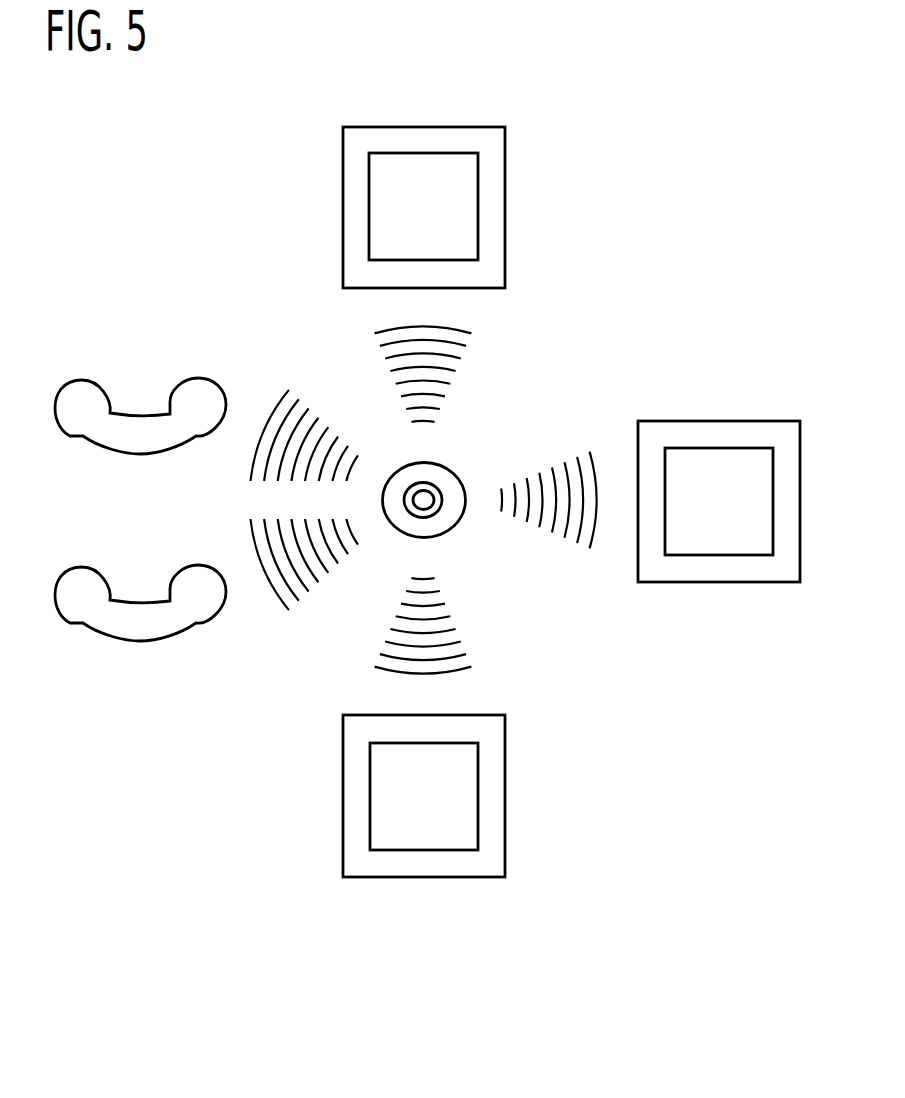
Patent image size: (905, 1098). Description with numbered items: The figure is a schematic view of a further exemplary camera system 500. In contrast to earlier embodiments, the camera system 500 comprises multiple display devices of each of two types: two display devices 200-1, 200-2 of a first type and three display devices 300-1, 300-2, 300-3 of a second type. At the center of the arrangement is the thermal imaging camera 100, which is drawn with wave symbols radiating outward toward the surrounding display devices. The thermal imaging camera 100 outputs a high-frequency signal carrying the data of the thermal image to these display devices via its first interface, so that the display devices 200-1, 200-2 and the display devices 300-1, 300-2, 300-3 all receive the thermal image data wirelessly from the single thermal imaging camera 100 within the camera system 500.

The thermal imaging camera 100 is at (457, 478).
The display device 200-1 is at (75, 380).
The display device 200-2 is at (75, 567).
The display device 300-1 is at (423, 127).
The display device 300-2 is at (718, 421).
The display device 300-3 is at (424, 877).
The camera system 500 is at (207, 789).